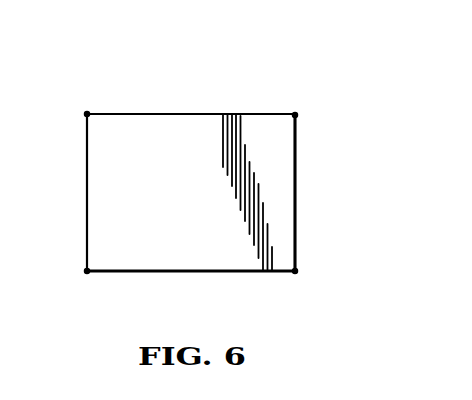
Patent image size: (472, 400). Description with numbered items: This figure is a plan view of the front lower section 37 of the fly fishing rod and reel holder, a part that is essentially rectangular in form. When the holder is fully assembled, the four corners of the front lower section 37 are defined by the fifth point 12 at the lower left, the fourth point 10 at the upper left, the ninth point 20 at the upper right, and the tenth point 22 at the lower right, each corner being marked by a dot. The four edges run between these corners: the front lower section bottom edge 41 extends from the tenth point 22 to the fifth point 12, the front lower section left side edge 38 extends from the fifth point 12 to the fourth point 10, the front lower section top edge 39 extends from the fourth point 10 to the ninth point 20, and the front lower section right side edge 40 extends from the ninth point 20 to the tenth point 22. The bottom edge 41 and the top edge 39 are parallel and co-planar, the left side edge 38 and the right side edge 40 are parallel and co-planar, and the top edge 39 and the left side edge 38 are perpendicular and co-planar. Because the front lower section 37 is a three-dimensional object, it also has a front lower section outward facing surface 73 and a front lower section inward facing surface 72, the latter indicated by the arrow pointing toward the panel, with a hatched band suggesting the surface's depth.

The fourth point 10 is at (87, 114).
The fifth point 12 is at (87, 271).
The ninth point 20 is at (296, 113).
The tenth point 22 is at (295, 271).
The front lower section 37 is at (184, 195).
The front lower section left side edge 38 is at (87, 173).
The front lower section top edge 39 is at (200, 114).
The front lower section right side edge 40 is at (297, 192).
The front lower section bottom edge 41 is at (175, 272).
The front lower section inward facing surface 72 is at (147, 80).
The front lower section outward facing surface 73 is at (100, 239).